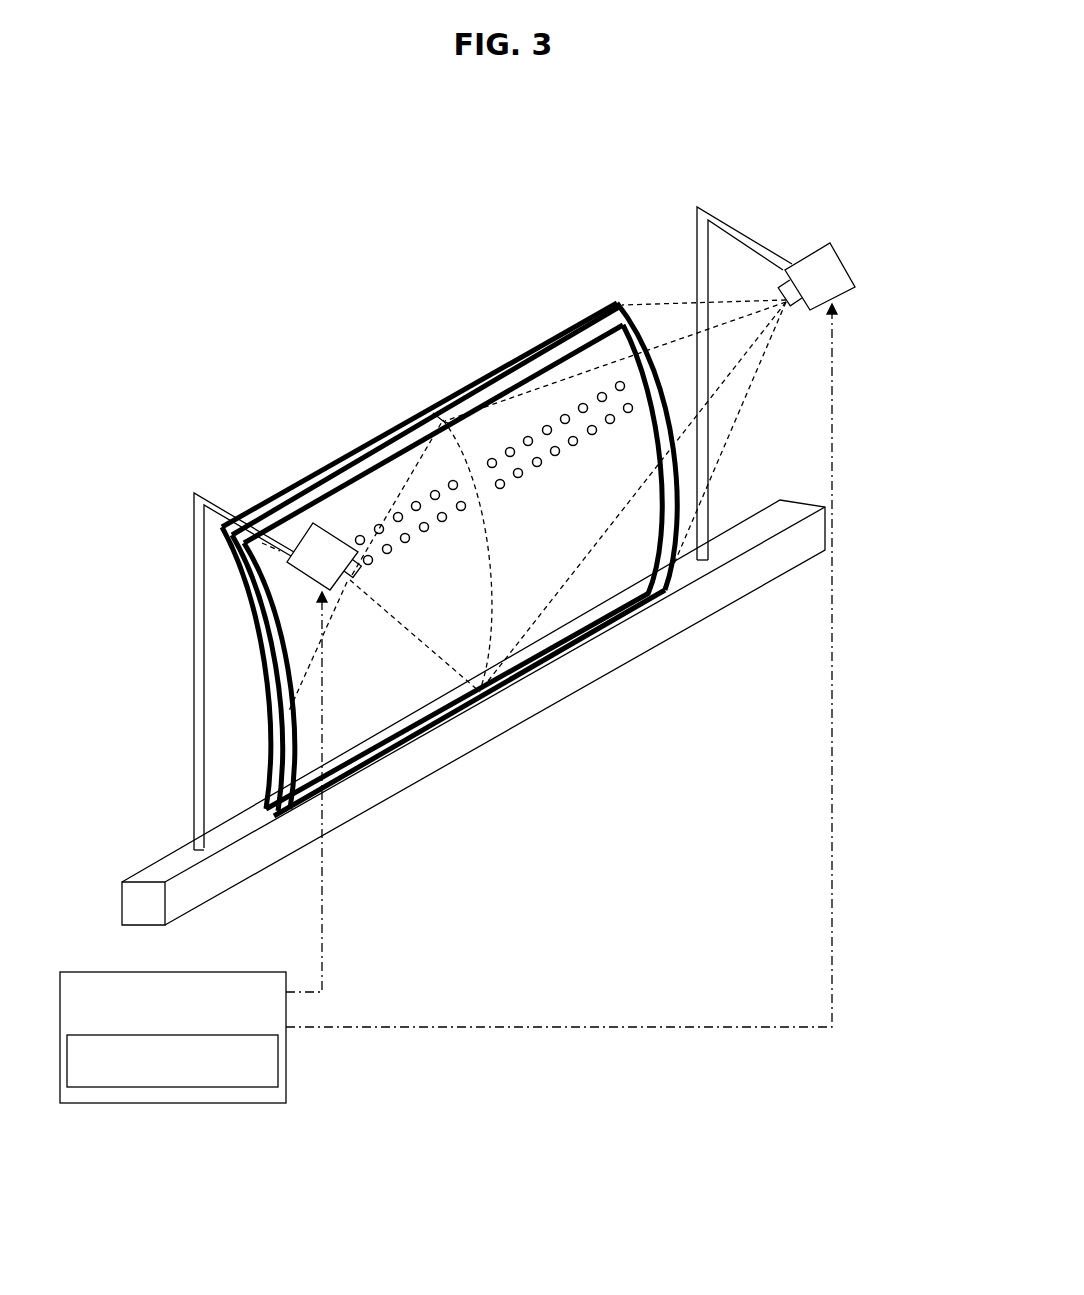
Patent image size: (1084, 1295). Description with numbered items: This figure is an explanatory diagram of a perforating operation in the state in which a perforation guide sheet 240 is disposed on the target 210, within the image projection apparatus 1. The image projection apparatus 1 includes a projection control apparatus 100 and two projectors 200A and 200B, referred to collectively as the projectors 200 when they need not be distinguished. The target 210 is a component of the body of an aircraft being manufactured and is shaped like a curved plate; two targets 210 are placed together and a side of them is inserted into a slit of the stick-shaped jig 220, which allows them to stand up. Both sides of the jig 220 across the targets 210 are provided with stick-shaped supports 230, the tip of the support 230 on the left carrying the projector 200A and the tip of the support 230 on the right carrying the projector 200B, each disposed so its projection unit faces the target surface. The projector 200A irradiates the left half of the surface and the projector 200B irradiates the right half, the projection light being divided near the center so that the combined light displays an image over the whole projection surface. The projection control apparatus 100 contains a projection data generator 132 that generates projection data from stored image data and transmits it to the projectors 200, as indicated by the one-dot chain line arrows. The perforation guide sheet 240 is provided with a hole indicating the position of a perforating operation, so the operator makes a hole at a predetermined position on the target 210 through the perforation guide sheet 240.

The image projection apparatus 1 is at (166, 1106).
The projection control apparatus 100 is at (207, 972).
The projection data generator 132 is at (257, 1088).
The projector 200 is at (544, 405).
The projector 200A is at (298, 536).
The projector 200B is at (850, 264).
The target 210 is at (330, 464).
The jig 220 is at (150, 866).
The support 230 is at (194, 752).
The perforation guide sheet 240 is at (428, 408).